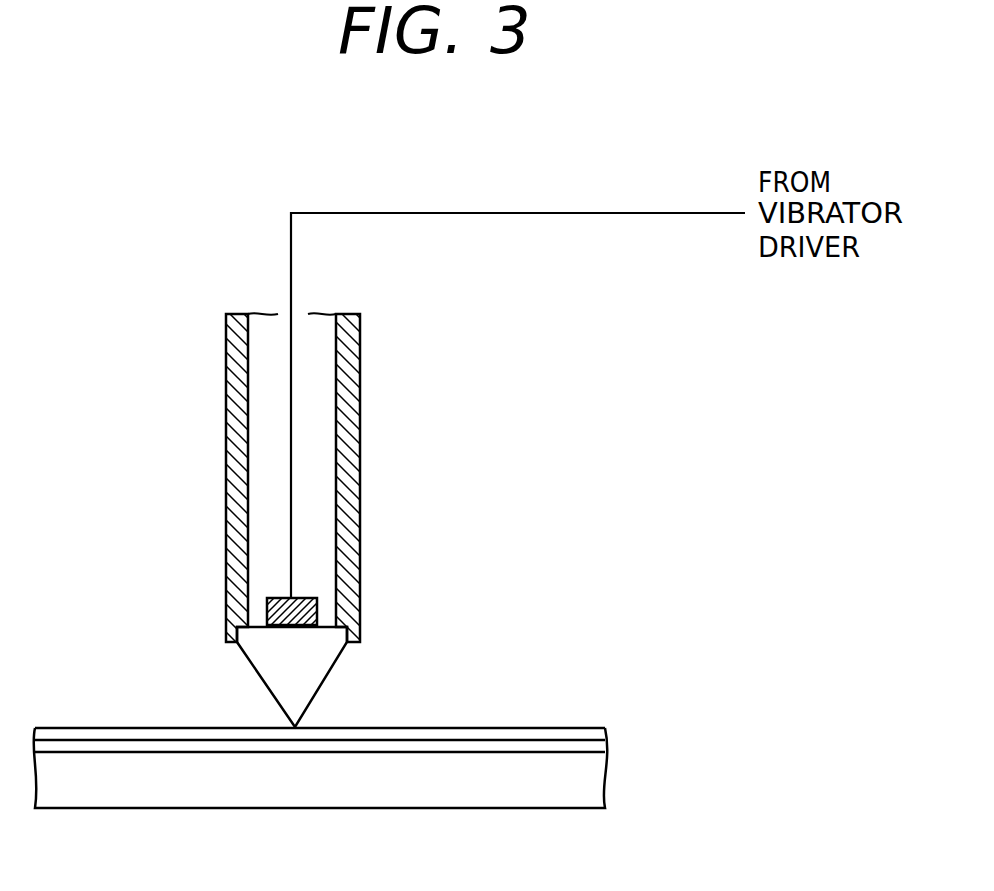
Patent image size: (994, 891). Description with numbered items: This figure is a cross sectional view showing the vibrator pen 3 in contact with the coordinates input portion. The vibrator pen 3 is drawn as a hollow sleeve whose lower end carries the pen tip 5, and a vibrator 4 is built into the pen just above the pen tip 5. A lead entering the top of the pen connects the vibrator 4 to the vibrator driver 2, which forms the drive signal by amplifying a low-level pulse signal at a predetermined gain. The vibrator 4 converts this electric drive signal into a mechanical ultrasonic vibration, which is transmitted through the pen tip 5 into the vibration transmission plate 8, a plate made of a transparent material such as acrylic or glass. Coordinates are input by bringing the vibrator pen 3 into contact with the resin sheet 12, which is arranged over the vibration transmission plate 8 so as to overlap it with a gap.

The vibrator driver 2 is at (325, 421).
The vibrator pen 3 is at (230, 385).
The vibrator 4 is at (266, 598).
The pen tip 5 is at (266, 673).
The resin sheet 12 is at (100, 733).
The vibration transmission plate 8 is at (148, 797).